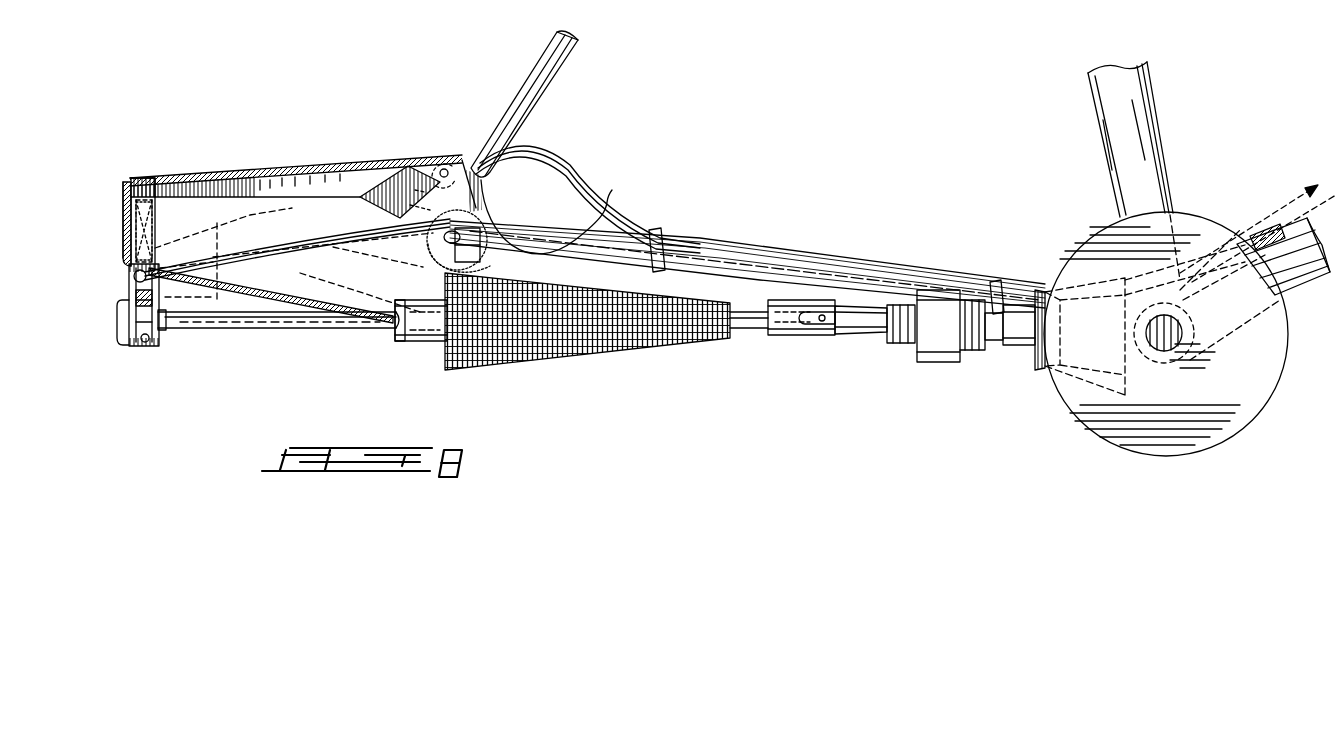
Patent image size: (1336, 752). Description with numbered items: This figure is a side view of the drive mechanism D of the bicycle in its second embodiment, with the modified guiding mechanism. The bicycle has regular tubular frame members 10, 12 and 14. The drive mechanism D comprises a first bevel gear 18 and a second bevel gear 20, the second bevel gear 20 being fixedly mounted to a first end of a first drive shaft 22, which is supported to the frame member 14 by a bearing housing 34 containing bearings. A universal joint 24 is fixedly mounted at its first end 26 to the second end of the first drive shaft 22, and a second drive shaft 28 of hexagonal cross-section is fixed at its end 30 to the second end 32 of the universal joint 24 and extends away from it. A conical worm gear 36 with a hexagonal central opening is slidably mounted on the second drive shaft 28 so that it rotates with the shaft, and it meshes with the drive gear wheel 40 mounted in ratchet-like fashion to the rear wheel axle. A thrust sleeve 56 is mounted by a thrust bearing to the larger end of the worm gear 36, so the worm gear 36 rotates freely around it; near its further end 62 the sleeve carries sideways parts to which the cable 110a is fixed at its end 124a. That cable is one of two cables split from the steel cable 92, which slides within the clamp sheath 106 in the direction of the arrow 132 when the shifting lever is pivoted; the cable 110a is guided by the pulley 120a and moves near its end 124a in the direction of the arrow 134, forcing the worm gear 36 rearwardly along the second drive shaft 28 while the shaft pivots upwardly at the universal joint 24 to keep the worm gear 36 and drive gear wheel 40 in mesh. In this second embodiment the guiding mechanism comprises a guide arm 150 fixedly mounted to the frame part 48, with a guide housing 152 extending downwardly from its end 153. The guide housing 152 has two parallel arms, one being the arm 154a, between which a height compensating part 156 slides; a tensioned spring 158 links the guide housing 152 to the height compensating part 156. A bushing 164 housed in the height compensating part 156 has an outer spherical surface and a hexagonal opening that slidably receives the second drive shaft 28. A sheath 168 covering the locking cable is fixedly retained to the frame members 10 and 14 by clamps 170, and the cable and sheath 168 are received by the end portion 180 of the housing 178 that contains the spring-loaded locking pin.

The drive mechanism D is at (688, 104).
The frame member 10 is at (1312, 275).
The frame member 12 is at (1148, 118).
The frame member 14 is at (690, 265).
The first bevel gear 18 is at (1077, 393).
The second bevel gear 20 is at (1037, 366).
The first drive shaft 22 is at (997, 341).
The universal joint 24 is at (827, 340).
The first end of the universal joint 26 is at (874, 340).
The second drive shaft 28 is at (330, 326).
The end of the second drive shaft 30 is at (763, 334).
The second end of the universal joint 32 is at (780, 335).
The bearing housing 34 is at (933, 353).
The conical worm gear 36 is at (600, 350).
The drive gear wheel 40 is at (537, 220).
The frame part 48 is at (488, 193).
The thrust sleeve 56 is at (432, 344).
The further end of the thrust sleeve 62 is at (402, 341).
The cable 92 is at (407, 162).
The clamp sheath 106 is at (780, 253).
The cable 110a is at (292, 256).
The pulley 120a is at (237, 221).
The end of cable 110a 124a is at (393, 327).
The arrow 132 is at (1263, 217).
The arrow 134 is at (258, 272).
The guide arm 150 is at (337, 188).
The guide housing 152 is at (157, 208).
The end of the guide arm 153 is at (143, 182).
The arm of the guide housing 154a is at (148, 342).
The height compensating part 156 is at (158, 328).
The tensioned spring 158 is at (118, 207).
The bushing 164 is at (120, 331).
The sheath 168 is at (228, 257).
The clamps 170 is at (656, 228).
The housing 178 is at (142, 300).
The end portion 180 is at (136, 277).